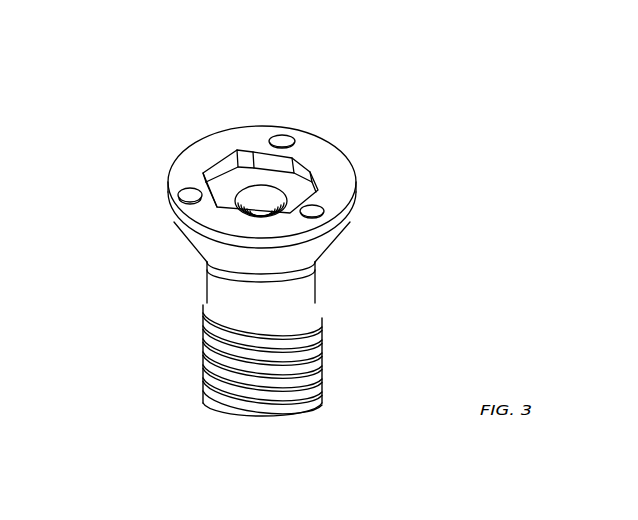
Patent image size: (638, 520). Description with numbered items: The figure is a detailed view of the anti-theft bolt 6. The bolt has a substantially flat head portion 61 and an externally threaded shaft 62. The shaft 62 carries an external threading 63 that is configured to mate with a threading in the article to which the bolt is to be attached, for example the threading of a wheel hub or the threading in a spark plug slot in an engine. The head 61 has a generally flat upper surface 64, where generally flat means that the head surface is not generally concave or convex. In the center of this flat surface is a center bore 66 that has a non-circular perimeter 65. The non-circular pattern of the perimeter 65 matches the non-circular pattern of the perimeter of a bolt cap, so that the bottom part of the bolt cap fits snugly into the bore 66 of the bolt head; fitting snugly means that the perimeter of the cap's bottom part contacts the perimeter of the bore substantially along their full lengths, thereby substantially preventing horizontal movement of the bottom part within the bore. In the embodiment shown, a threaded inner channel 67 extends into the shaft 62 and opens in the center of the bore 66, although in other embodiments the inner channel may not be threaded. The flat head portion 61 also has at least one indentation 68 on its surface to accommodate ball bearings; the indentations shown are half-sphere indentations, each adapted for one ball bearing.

The anti-theft bolt 6 is at (275, 226).
The head portion 61 is at (275, 149).
The shaft 62 is at (207, 287).
The external threading 63 is at (307, 357).
The upper surface 64 is at (332, 172).
The non-circular perimeter 65 is at (262, 215).
The center bore 66 is at (217, 162).
The threaded inner channel 67 is at (267, 185).
The indentation 68 is at (178, 200).